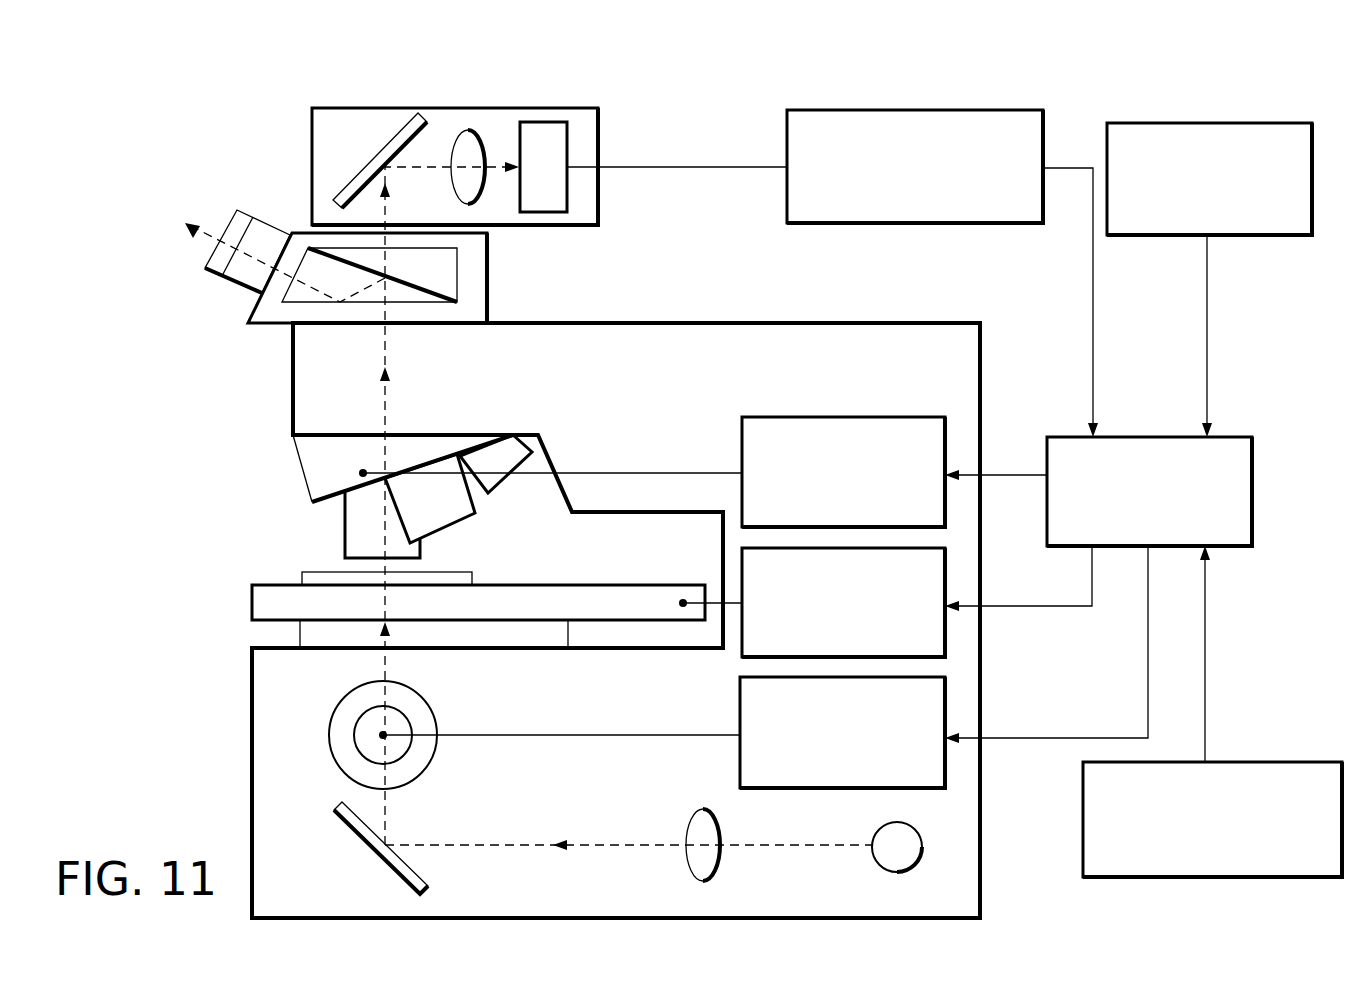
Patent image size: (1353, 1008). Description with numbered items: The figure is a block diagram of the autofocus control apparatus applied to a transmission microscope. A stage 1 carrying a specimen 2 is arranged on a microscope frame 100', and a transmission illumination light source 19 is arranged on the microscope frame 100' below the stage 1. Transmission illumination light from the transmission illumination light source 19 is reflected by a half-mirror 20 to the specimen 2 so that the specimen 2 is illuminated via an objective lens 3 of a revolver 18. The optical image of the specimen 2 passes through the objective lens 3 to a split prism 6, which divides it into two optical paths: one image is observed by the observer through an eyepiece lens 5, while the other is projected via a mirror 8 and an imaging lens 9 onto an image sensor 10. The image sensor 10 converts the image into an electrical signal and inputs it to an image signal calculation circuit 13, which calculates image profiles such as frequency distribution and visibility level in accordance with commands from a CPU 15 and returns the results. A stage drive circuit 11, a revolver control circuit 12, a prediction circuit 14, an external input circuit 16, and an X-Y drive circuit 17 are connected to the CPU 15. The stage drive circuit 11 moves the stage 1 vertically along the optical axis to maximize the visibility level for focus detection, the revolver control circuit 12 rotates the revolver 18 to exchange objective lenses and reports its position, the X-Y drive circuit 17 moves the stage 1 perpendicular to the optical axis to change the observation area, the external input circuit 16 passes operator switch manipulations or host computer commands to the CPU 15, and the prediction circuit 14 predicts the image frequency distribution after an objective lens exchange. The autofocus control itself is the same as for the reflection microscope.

The stage 1 is at (252, 605).
The specimen 2 is at (302, 577).
The objective lens 3 is at (345, 535).
The eyepiece lens 5 is at (260, 222).
The split prism 6 is at (457, 272).
The mirror 8 is at (397, 127).
The imaging lens 9 is at (467, 131).
The image sensor 10 is at (545, 123).
The stage drive circuit 11 is at (740, 705).
The revolver control circuit 12 is at (940, 416).
The image signal calculation circuit 13 is at (925, 116).
The prediction circuit 14 is at (1212, 125).
The CPU 15 is at (1253, 497).
The external input circuit 16 is at (1278, 762).
The X-Y drive circuit 17 is at (946, 562).
The revolver 18 is at (303, 470).
The transmission illumination light source 19 is at (915, 860).
The half-mirror 20 is at (345, 830).
The microscope frame 100' is at (616, 585).